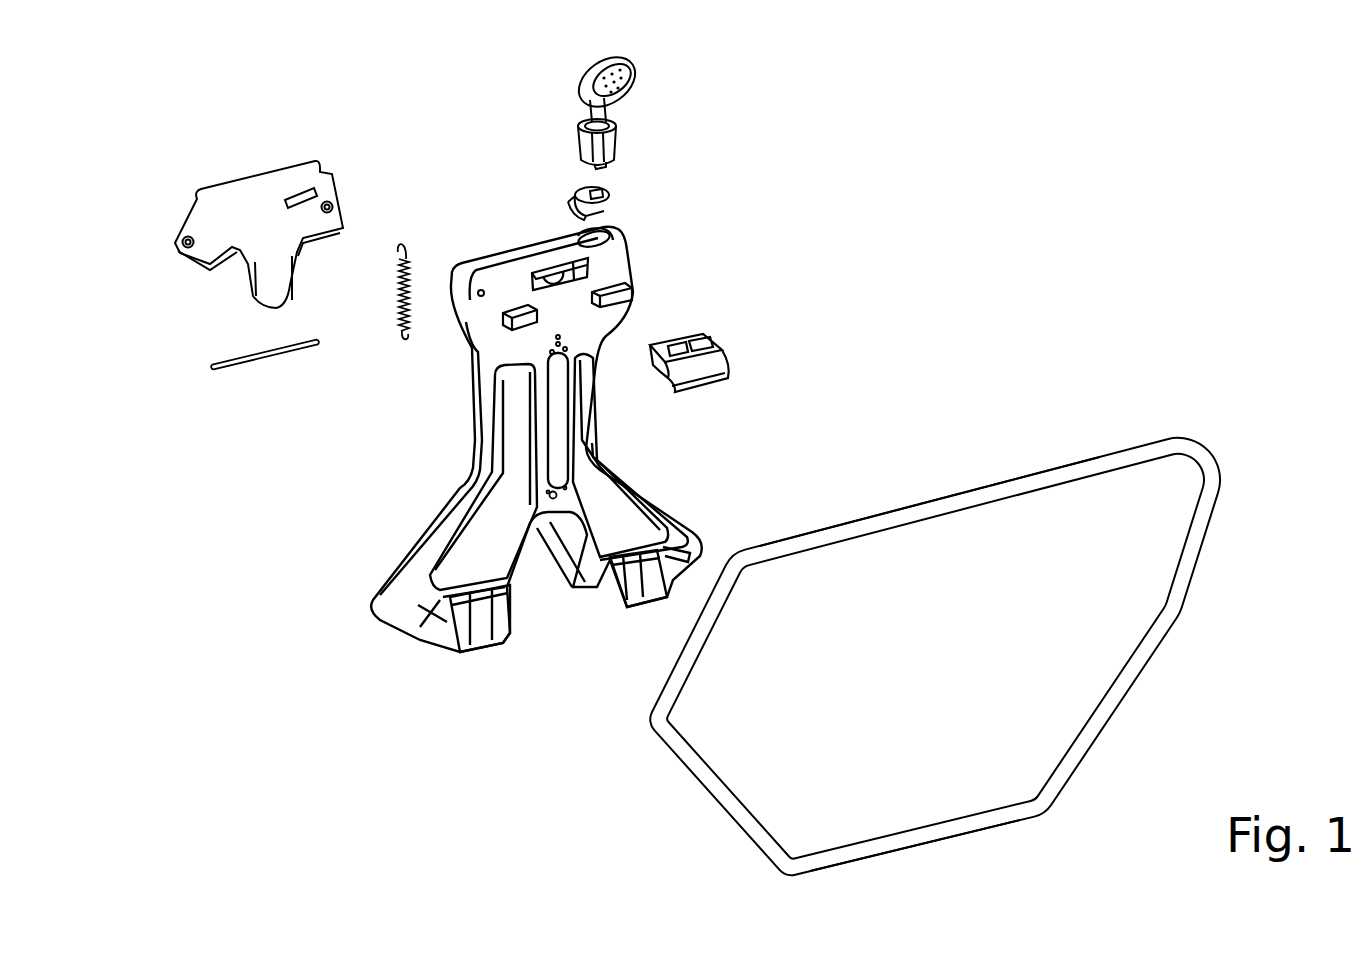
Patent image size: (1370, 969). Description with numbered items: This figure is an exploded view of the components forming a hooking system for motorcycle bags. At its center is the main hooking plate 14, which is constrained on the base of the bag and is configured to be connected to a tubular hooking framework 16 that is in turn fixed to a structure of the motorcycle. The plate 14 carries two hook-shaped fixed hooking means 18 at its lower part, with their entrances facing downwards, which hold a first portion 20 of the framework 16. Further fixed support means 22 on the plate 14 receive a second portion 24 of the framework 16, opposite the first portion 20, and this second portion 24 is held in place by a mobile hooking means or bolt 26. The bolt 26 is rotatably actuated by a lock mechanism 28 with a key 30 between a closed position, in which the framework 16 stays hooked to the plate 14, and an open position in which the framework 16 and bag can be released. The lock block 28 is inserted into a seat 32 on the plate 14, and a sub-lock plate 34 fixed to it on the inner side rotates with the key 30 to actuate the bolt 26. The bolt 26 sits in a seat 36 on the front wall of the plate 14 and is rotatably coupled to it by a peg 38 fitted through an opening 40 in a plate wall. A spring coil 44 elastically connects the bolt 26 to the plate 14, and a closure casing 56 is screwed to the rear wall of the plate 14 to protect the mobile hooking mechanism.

The main hooking plate 14 is at (600, 452).
The hooking framework 16 is at (1197, 587).
The hook-shaped fixed hooking means 18 is at (512, 642).
The first portion 20 is at (930, 830).
The fixed support means 22 is at (622, 282).
The second portion 24 is at (928, 503).
The bolt 26 is at (730, 366).
The lock mechanism 28 is at (616, 145).
The key 30 is at (637, 80).
The seat 32 is at (610, 228).
The sub-lock plate 34 is at (610, 193).
The seat 36 is at (560, 267).
The peg 38 is at (267, 357).
The opening 40 is at (480, 291).
The spring coil 44 is at (413, 288).
The closure casing 56 is at (243, 181).